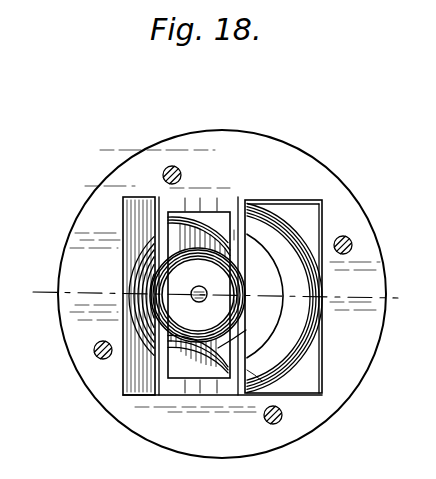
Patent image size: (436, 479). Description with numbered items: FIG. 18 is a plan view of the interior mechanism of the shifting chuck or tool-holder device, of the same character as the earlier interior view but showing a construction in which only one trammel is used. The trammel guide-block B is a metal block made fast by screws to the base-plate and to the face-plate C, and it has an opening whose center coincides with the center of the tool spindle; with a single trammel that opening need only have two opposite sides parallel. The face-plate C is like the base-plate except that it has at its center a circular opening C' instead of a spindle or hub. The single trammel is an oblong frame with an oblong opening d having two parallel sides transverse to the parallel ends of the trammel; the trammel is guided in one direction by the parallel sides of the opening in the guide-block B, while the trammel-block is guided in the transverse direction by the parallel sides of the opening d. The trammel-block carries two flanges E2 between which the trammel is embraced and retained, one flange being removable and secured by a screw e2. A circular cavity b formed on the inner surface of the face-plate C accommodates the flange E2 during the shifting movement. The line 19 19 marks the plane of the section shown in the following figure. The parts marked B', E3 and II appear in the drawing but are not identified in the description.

The section line 19 is at (206, 296).
The trammel guide-block B is at (222, 282).
The frame plate side B' is at (330, 298).
The face-plate C is at (283, 296).
The circular opening C' is at (331, 296).
The oblong opening d is at (218, 348).
The circular cavity b is at (273, 372).
The intermediate band II is at (236, 348).
The flanges E2 is at (198, 295).
The eccentric E3 is at (219, 295).
The screw e2 is at (199, 286).